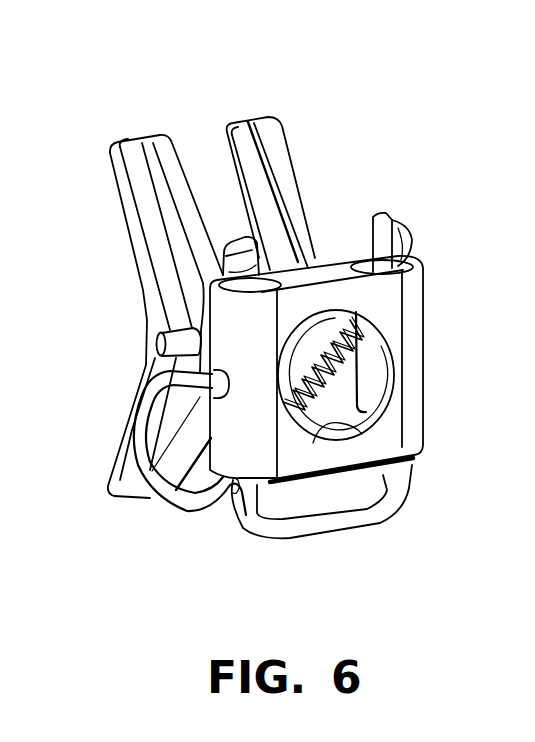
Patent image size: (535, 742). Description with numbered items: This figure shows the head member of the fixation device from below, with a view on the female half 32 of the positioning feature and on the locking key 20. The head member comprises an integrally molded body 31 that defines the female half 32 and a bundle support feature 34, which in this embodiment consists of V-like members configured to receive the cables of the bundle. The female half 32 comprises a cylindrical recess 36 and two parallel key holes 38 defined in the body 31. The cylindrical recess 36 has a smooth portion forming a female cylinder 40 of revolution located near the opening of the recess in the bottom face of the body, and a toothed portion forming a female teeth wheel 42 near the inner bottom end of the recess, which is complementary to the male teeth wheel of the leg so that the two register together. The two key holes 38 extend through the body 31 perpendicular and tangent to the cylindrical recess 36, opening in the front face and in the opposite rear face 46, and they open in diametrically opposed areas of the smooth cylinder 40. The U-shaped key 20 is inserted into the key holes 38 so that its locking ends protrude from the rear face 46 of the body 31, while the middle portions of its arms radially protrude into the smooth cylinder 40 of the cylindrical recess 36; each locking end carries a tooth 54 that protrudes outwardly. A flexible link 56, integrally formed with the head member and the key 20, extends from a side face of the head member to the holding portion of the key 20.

The key 20 is at (288, 528).
The body 31 is at (418, 309).
The female half of the positioning feature 32 is at (452, 453).
The bundle support feature 34 is at (273, 155).
The cylindrical recess 36 is at (384, 368).
The key holes 38 is at (340, 260).
The female cylinder 40 is at (356, 412).
The female teeth wheel 42 is at (333, 372).
The rear face 46 is at (303, 268).
The tooth 54 is at (413, 234).
The flexible link 56 is at (170, 504).